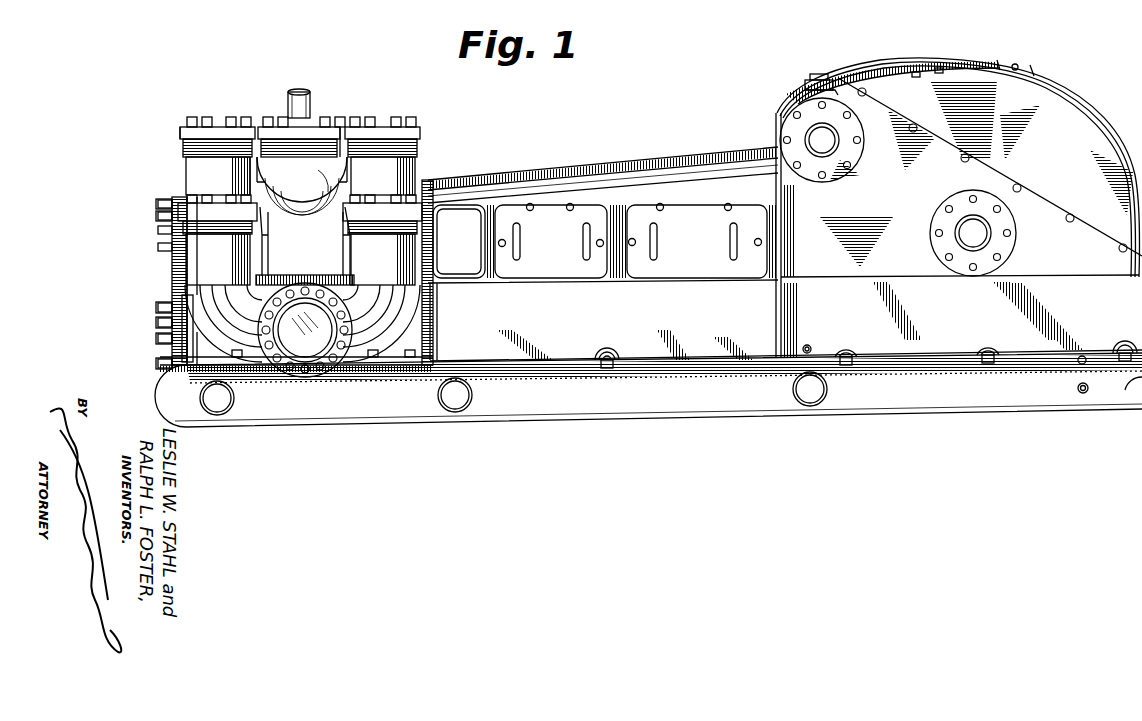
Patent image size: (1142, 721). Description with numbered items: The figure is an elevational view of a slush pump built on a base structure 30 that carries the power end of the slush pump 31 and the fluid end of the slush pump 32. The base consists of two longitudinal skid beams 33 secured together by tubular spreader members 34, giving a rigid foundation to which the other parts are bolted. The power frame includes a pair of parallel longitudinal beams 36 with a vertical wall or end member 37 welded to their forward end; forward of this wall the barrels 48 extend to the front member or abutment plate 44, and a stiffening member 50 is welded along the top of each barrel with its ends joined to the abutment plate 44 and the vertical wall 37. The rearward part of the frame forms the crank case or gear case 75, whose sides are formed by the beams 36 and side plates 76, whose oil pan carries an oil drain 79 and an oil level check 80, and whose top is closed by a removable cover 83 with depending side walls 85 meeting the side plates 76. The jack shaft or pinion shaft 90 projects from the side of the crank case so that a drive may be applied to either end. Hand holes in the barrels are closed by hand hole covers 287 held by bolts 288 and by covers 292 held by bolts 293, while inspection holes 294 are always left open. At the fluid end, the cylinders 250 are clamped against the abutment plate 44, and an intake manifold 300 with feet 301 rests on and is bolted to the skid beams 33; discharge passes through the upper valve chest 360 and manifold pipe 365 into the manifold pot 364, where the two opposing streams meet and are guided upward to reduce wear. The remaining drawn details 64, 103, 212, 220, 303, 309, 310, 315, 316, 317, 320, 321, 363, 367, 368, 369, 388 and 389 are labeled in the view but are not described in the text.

The base structure 30 is at (598, 405).
The power end of the slush pump 31 is at (647, 150).
The fluid end of the slush pump 32 is at (162, 136).
The longitudinal skid beams 33 is at (412, 410).
The tubular spreader members 34 is at (200, 404).
The longitudinal beams 36 is at (960, 350).
The vertical wall or end member 37 is at (776, 322).
The front member or abutment plate 44 is at (430, 295).
The barrels 48 is at (622, 300).
The stiffening member 50 is at (522, 178).
The bracket 64 is at (790, 116).
The crank case or gear case 75 is at (1082, 90).
The side plates 76 is at (925, 262).
The oil drain 79 is at (1078, 389).
The oil level check 80 is at (1083, 356).
The removable cover 83 is at (1057, 74).
The depending side walls 85 is at (982, 72).
The jack shaft or pinion shaft 90 is at (812, 135).
The bearing cover 103 is at (1005, 240).
The bolt 212 is at (808, 346).
The lifting lug 220 is at (808, 100).
The cylinders 250 is at (305, 246).
The hand hole covers 287 is at (702, 280).
The bolts 288 is at (730, 207).
The covers 292 is at (525, 282).
The bolts 293 is at (590, 205).
The inspection holes 294 is at (445, 215).
The intake manifold 300 is at (258, 350).
The feet 301 is at (242, 362).
The flange bolts 303 is at (310, 374).
The nut 309 is at (156, 365).
The nut 310 is at (155, 342).
The stud 315 is at (195, 315).
The nut 316 is at (155, 324).
The nut 317 is at (155, 307).
The elbow 320 is at (215, 310).
The manifold 321 is at (172, 262).
The upper valve chest 360 is at (176, 169).
The valve body 363 is at (297, 205).
The manifold pot 364 is at (305, 203).
The manifold pipe 365 is at (222, 120).
The stem 367 is at (290, 100).
The cap 368 is at (312, 118).
The flange 369 is at (334, 155).
The bolt 388 is at (156, 206).
The bolt 389 is at (156, 230).